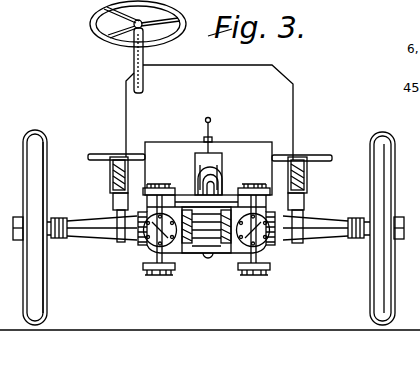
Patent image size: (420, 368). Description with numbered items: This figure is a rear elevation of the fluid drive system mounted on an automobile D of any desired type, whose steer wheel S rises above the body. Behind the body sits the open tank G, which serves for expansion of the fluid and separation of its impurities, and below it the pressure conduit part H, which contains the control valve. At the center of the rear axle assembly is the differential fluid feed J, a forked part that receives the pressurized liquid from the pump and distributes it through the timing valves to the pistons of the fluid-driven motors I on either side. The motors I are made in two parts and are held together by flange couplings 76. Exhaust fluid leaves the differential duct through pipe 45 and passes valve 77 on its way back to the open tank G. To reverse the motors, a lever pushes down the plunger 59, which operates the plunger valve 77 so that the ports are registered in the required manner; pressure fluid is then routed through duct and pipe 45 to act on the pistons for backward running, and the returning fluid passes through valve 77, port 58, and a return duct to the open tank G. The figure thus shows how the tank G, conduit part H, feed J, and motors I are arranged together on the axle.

The steer wheel S is at (176, 42).
The automobile D is at (290, 132).
The open tank G is at (208, 168).
The pressure conduit part H is at (222, 167).
The fluid-driven motors I is at (157, 240).
The differential fluid feed J is at (208, 256).
The port 58 is at (186, 184).
The plunger 59 is at (212, 131).
The plunger valve 77 is at (209, 162).
The pipe 45 is at (209, 187).
The flange couplings 76 is at (227, 253).